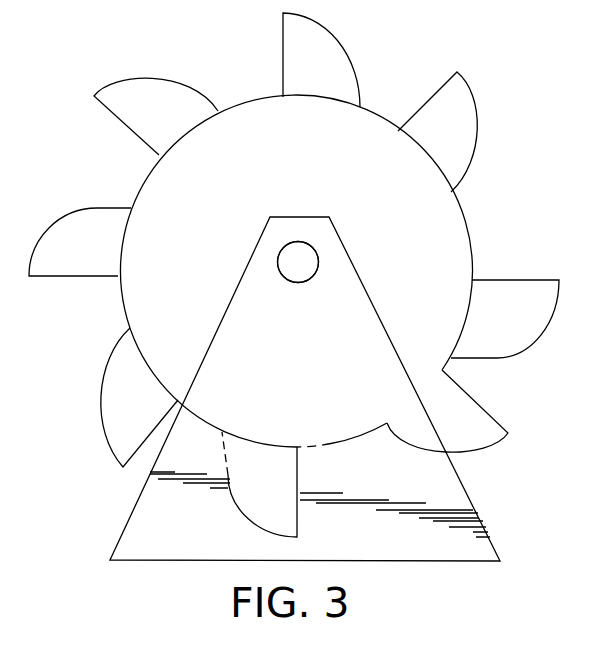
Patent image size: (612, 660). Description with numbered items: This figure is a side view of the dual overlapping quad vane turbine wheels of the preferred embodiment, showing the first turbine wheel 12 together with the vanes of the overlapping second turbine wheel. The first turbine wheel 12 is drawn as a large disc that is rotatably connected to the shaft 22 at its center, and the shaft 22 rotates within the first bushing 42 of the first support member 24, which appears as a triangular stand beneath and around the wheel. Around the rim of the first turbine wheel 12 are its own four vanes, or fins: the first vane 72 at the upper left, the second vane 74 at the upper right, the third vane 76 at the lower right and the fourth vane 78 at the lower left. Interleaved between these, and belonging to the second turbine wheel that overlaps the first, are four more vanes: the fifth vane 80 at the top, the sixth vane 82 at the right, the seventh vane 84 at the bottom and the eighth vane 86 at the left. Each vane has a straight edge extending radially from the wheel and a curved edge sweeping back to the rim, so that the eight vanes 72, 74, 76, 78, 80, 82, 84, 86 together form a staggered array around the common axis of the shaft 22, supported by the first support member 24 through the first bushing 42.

The first turbine wheel 12 is at (227, 201).
The shaft 22 is at (300, 257).
The first support member 24 is at (319, 381).
The first bushing 42 is at (317, 265).
The first vane 72 is at (176, 135).
The second vane 74 is at (469, 140).
The third vane 76 is at (478, 435).
The fourth vane 78 is at (145, 430).
The fifth vane 80 is at (325, 90).
The sixth vane 82 is at (518, 323).
The seventh vane 84 is at (288, 508).
The eighth vane 86 is at (105, 268).